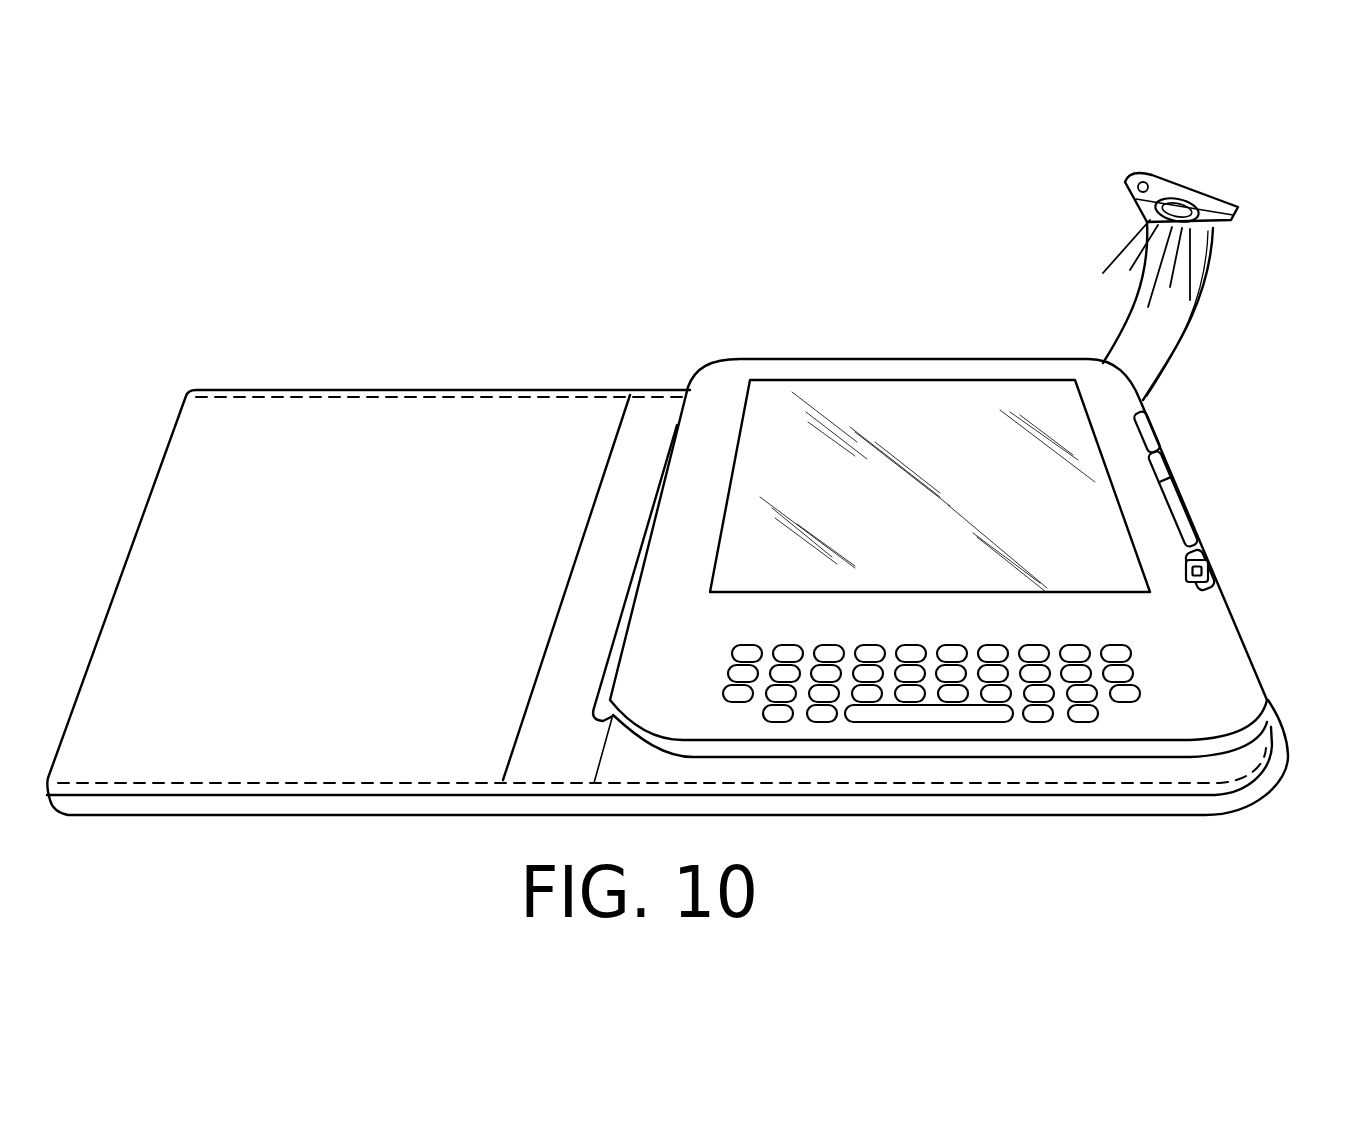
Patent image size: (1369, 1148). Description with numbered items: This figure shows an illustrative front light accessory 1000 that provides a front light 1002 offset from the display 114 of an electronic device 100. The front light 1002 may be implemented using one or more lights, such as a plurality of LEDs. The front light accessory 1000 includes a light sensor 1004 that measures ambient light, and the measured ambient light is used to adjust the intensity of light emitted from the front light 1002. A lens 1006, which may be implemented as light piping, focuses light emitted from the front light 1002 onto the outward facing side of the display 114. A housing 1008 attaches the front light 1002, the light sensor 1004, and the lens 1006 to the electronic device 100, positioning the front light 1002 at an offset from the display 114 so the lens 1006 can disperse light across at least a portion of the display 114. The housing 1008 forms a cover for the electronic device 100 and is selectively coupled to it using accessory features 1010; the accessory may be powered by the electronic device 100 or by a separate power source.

The electronic device 100 is at (938, 515).
The display 114 is at (926, 430).
The front light accessory 1000 is at (706, 452).
The front light 1002 is at (1184, 198).
The light sensor 1004 is at (1130, 186).
The lens 1006 is at (1202, 226).
The housing 1008 is at (1123, 328).
The accessory features 1010 is at (674, 426).